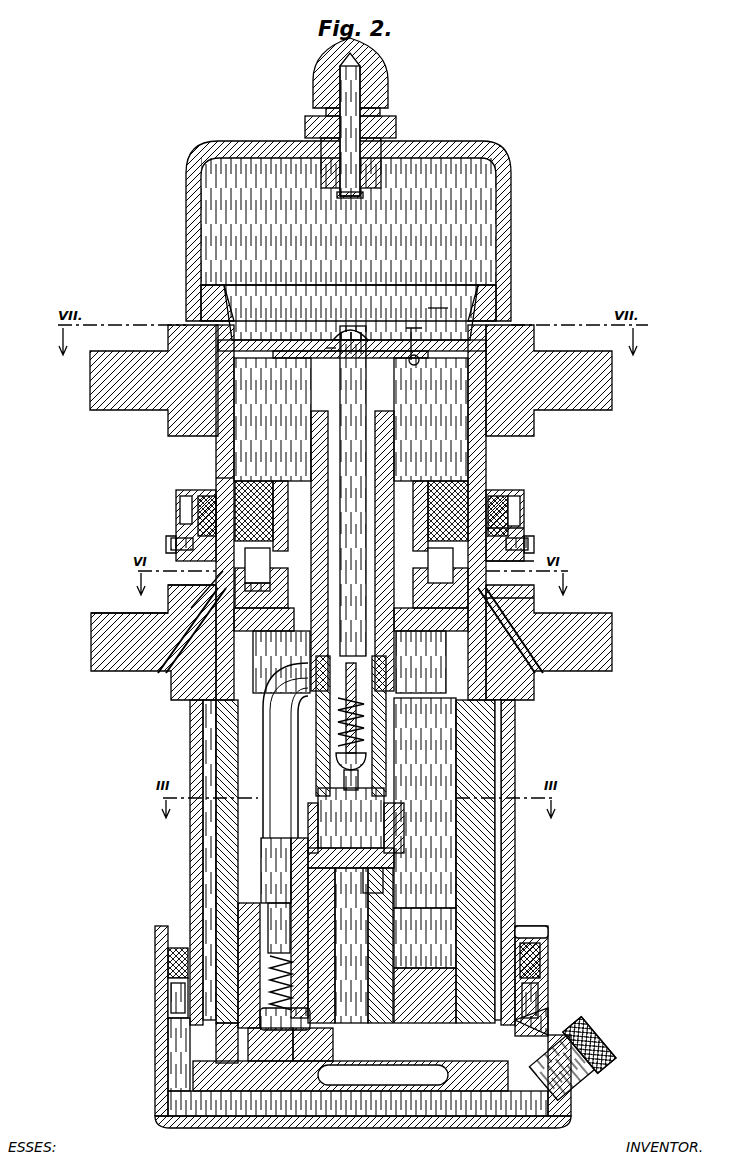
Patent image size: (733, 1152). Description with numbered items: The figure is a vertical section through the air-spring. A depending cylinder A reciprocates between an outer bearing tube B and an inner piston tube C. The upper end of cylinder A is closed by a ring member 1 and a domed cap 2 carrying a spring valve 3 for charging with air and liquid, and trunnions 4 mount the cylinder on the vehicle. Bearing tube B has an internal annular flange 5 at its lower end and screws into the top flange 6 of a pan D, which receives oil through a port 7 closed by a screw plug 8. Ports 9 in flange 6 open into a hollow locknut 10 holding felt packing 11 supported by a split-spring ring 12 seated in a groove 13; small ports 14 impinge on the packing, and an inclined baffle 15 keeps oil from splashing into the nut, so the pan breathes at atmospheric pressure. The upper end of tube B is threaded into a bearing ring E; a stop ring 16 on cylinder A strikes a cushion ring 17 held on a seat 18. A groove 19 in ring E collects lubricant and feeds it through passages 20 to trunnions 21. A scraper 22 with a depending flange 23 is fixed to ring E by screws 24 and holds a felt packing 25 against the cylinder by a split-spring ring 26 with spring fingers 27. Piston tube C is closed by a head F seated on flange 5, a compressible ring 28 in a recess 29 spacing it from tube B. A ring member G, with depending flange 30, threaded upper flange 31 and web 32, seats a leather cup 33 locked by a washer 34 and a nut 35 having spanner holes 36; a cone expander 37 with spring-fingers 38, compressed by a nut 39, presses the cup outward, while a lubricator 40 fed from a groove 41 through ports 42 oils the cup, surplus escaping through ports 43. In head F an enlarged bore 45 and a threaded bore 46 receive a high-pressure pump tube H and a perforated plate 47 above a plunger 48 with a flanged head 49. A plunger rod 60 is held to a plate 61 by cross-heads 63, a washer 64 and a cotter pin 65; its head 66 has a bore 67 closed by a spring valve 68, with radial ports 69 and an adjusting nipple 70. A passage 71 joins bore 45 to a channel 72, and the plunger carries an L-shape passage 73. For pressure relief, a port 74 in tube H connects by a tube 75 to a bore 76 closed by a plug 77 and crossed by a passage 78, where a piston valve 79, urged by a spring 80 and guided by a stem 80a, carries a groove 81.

The ring member 1 is at (515, 320).
The domed cap 2 is at (503, 205).
The spring valve 3 is at (385, 112).
The trunnions 4 is at (82, 372).
The internal annular flange 5 is at (218, 1085).
The top flange 6 is at (540, 990).
The port 7 is at (580, 1072).
The screw plug 8 is at (590, 1045).
The ports 9 is at (542, 1020).
The hollow locknut 10 is at (540, 965).
The packing 11 is at (532, 955).
The split-spring ring 12 is at (150, 1000).
The groove 13 is at (160, 958).
The ports 14 is at (540, 945).
The annular baffle 15 is at (160, 1055).
The stop ring 16 is at (185, 920).
The cushion ring 17 is at (176, 583).
The seat 18 is at (165, 605).
The circumferential groove 19 is at (180, 533).
The passages 20 is at (137, 665).
The trunnions 21 is at (83, 650).
The annular scraper 22 is at (195, 490).
The depending flange 23 is at (516, 528).
The screws 24 is at (524, 538).
The washer or packing 25 is at (493, 482).
The split-spring ring 26 is at (516, 495).
The spring fingers 27 is at (516, 505).
The compressible packing ring 28 is at (430, 1062).
The annular seat or recess 29 is at (430, 1083).
The annular flange 30 is at (205, 690).
The upwardly extending flange 31 is at (312, 520).
The horizontal web 32 is at (421, 662).
The leather packing cup 33 is at (520, 553).
The washer 34 is at (281, 662).
The nut 35 is at (186, 510).
The spanner holes 36 is at (262, 555).
The cone expander 37 is at (420, 548).
The spring-fingers 38 is at (376, 530).
The nut 39 is at (222, 470).
The lubricator 40 is at (222, 485).
The annular groove 41 is at (247, 470).
The vertical ports 42 is at (444, 470).
The horizontal ports 43 is at (262, 560).
The enlarged bore 45 is at (386, 850).
The threaded bore 46 is at (396, 815).
The perforated plate 47 is at (351, 818).
The plunger 48 is at (385, 930).
The flanged head 49 is at (376, 835).
The plunger rod 60 is at (360, 388).
The metal diaphragm or plate 61 is at (438, 299).
The cross-heads 63 is at (330, 315).
The washer 64 is at (322, 350).
The cotter pin 65 is at (410, 352).
The head 66 is at (420, 709).
The axial bore 67 is at (356, 728).
The spring-actuated valve 68 is at (300, 745).
The inclined radial ports 69 is at (318, 640).
The nipple 70 is at (360, 762).
The passage 71 is at (370, 905).
The open channel 72 is at (396, 1000).
The L-shape passage 73 is at (375, 870).
The port 74 is at (351, 612).
The tube 75 is at (262, 761).
The vertical bore 76 is at (235, 895).
The screw-plug 77 is at (288, 1053).
The horizontal passage 78 is at (302, 1053).
The piston valve 79 is at (275, 868).
The coiled spring 80 is at (286, 955).
The valve stem 80a is at (262, 1040).
The circumferential groove 81 is at (282, 900).
The cylinder A is at (470, 835).
The bearing tube B is at (507, 876).
The piston tube C is at (455, 895).
The pan D is at (358, 1065).
The bearing ring E is at (550, 590).
The head F is at (287, 993).
The ring member G is at (222, 590).
The high-pressure pump tube H is at (390, 738).